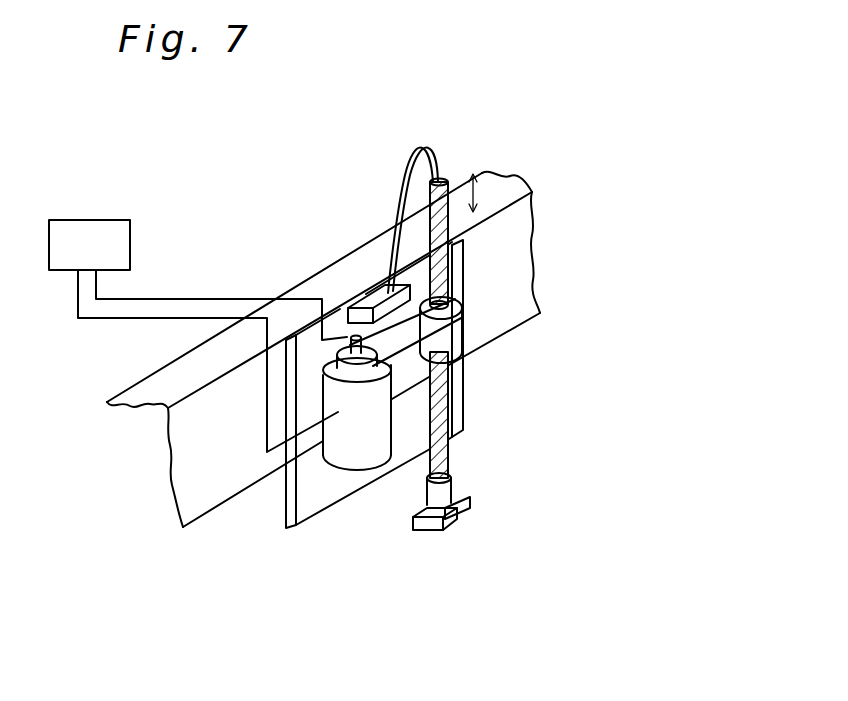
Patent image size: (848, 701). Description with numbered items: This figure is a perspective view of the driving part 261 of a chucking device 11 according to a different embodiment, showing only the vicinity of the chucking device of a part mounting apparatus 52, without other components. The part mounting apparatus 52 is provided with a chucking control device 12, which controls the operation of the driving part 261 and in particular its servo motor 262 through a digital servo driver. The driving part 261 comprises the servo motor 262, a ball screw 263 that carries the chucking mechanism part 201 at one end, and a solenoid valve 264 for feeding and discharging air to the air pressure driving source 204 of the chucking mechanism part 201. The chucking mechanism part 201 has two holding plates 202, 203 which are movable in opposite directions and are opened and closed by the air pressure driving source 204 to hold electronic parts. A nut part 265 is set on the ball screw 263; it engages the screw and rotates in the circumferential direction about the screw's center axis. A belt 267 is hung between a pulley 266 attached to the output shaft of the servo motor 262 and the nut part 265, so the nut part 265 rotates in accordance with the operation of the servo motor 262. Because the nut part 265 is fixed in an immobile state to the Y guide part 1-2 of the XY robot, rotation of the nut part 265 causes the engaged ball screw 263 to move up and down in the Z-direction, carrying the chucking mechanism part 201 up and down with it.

The Y guide part 1-2 is at (522, 242).
The chucking device 11 is at (663, 352).
The chucking control device 12 is at (93, 218).
The part mounting apparatus 52 is at (505, 601).
The chucking mechanism part 201 is at (480, 515).
The holding plate 202 is at (426, 524).
The holding plate 203 is at (471, 505).
The air pressure driving source 204 is at (456, 493).
The driving part 261 is at (517, 389).
The servo motor 262 is at (337, 436).
The ball screw 263 is at (456, 400).
The solenoid valve 264 is at (363, 303).
The nut part 265 is at (463, 327).
The pulley 266 is at (267, 383).
The belt 267 is at (362, 492).